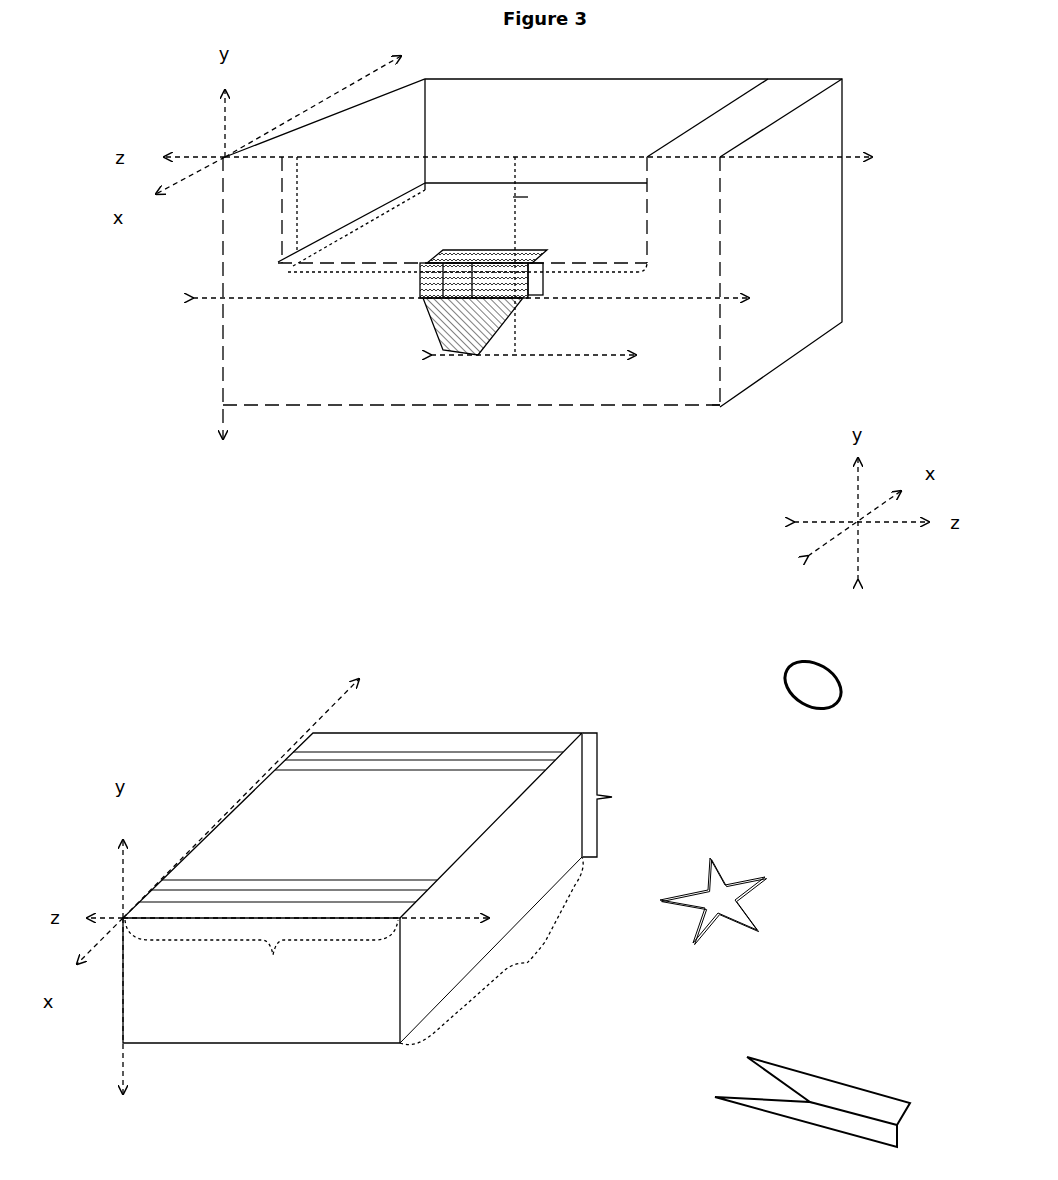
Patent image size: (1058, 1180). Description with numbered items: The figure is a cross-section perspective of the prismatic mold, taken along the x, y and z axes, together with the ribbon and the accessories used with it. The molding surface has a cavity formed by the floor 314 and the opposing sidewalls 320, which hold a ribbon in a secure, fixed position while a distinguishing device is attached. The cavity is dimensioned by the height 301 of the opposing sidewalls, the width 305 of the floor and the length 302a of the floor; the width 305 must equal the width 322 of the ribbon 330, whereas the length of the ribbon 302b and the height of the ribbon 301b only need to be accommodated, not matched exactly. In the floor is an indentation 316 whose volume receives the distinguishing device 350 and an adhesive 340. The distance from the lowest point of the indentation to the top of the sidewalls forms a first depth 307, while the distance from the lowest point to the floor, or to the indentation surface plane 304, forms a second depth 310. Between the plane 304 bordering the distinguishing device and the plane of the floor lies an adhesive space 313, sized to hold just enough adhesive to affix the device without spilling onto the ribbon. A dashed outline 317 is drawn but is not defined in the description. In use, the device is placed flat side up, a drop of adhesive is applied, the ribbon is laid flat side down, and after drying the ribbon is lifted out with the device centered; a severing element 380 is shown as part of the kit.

The height of opposing sidewalls 301 is at (297, 232).
The length of the floor 302a is at (372, 272).
The indentation surface plane 304 is at (362, 300).
The width of the floor 305 is at (383, 278).
The first depth 307 is at (513, 197).
The second depth 310 is at (525, 392).
The adhesive space 313 is at (543, 280).
The floor 314 is at (536, 188).
The indentation 316 is at (477, 355).
The boundary outline 317 is at (703, 428).
The opposing sidewalls 320 is at (838, 130).
The width of the ribbon 322 is at (261, 980).
The ribbon 330 is at (550, 733).
The height of the ribbon 301b is at (628, 795).
The length of the ribbon 302b is at (506, 951).
The adhesive 340 is at (803, 688).
The distinguishing device 350 is at (760, 890).
The severing element 380 is at (833, 1080).